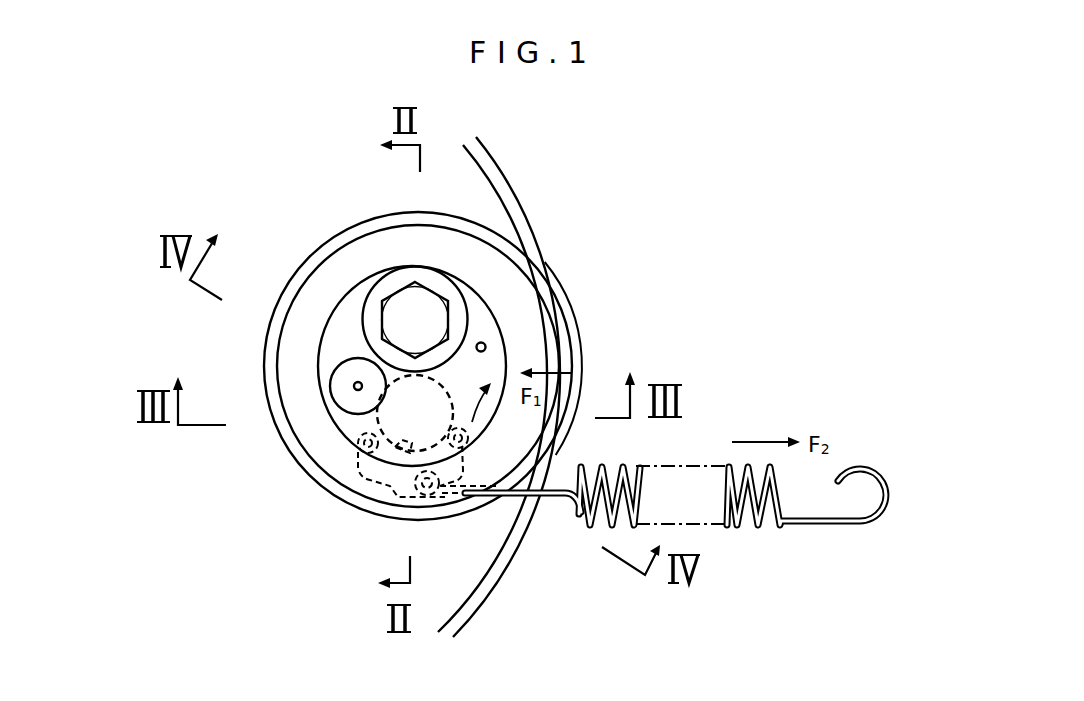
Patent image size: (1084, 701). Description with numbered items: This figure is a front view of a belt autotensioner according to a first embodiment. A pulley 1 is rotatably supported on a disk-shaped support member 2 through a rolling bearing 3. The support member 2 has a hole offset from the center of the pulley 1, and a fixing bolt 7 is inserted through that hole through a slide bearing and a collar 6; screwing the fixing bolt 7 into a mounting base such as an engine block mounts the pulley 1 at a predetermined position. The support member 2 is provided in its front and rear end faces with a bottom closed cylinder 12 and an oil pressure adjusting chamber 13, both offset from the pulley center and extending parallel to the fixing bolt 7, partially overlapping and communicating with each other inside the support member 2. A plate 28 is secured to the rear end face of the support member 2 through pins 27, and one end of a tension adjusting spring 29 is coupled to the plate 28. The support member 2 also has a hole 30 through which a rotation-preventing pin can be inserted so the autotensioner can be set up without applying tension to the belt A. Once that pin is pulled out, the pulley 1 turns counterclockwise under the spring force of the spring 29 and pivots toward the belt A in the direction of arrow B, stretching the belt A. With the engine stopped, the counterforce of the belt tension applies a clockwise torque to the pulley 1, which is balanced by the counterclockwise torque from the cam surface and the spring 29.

The pulley 1 is at (487, 238).
The support member 2 is at (497, 370).
The rolling bearing 3 is at (513, 285).
The collar 6 is at (393, 280).
The fixing bolt 7 is at (397, 315).
The bottom closed cylinder 12 is at (395, 498).
The oil pressure adjusting chamber 13 is at (342, 372).
The pins 27 is at (357, 447).
The plate 28 is at (395, 476).
The tension adjusting spring 29 is at (803, 527).
The hole 30 is at (486, 346).
The belt A is at (479, 577).
The arrow (pivoting direction) B is at (476, 397).